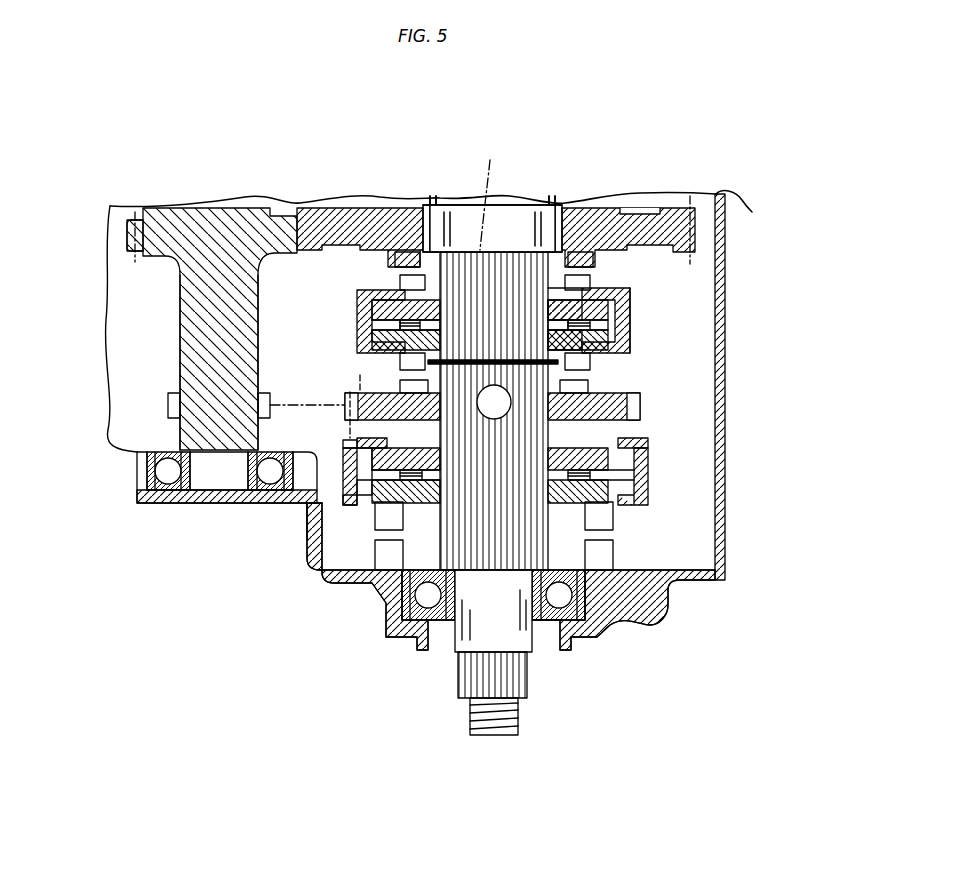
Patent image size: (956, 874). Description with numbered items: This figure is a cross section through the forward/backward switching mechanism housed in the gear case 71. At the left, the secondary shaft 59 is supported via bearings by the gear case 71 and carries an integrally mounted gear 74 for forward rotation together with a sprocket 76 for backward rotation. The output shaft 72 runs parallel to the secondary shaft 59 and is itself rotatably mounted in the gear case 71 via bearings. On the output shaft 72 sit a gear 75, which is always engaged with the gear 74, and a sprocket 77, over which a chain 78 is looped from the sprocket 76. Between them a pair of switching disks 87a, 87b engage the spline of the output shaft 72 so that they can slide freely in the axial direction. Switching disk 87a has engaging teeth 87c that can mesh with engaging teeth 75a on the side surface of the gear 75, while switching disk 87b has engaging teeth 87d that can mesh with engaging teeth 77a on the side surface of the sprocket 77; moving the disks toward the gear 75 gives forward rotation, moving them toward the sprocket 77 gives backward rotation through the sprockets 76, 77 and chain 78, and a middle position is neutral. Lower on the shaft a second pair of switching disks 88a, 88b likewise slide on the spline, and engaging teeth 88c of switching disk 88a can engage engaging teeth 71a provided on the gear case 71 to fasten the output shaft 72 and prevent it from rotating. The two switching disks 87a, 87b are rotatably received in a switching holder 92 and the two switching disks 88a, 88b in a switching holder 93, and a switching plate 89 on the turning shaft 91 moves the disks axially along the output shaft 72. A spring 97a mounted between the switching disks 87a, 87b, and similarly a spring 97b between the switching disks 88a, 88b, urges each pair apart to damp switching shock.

The secondary shaft 59 is at (184, 320).
The gear case 71 is at (314, 575).
The engaging teeth 71a is at (385, 560).
The output shaft 72 is at (530, 640).
The gear 74 is at (150, 222).
The gear 75 is at (375, 225).
The engaging teeth 75a is at (405, 258).
The sprocket 76 is at (168, 405).
The sprocket 77 is at (630, 402).
The engaging teeth 77a is at (358, 378).
The chain 78 is at (235, 455).
The switching disk 87a is at (578, 258).
The switching disk 87b is at (372, 333).
The engaging teeth 87c is at (405, 285).
The engaging teeth 87d is at (590, 362).
The switching disk 88a is at (640, 478).
The switching disk 88b is at (640, 438).
The engaging teeth 88c is at (372, 518).
The switching plate 89 is at (489, 193).
The turning shaft 91 is at (580, 385).
The switching holder 92 is at (625, 324).
The switching holder 93 is at (640, 498).
The spring 97a is at (622, 306).
The spring 97b is at (610, 460).